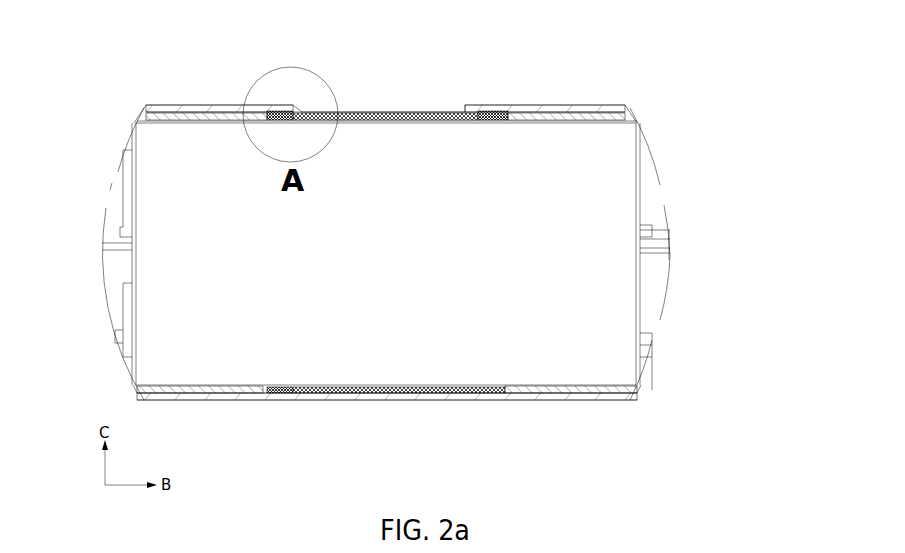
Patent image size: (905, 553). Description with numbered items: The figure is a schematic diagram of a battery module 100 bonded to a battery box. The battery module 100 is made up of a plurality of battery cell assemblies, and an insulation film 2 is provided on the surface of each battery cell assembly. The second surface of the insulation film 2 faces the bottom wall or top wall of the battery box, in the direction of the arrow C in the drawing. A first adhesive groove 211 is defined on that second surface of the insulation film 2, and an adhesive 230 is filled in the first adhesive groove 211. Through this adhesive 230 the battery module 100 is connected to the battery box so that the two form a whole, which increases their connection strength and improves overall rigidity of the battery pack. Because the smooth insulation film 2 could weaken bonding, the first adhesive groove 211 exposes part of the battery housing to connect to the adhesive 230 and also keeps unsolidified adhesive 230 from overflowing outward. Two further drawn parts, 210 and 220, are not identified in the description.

The insulation film 2 is at (598, 112).
The battery module 100 is at (594, 240).
The first electrode tab 210 is at (447, 400).
The first adhesive groove 211 is at (508, 112).
The second electrode tab 220 is at (430, 108).
The adhesive 230 is at (312, 114).